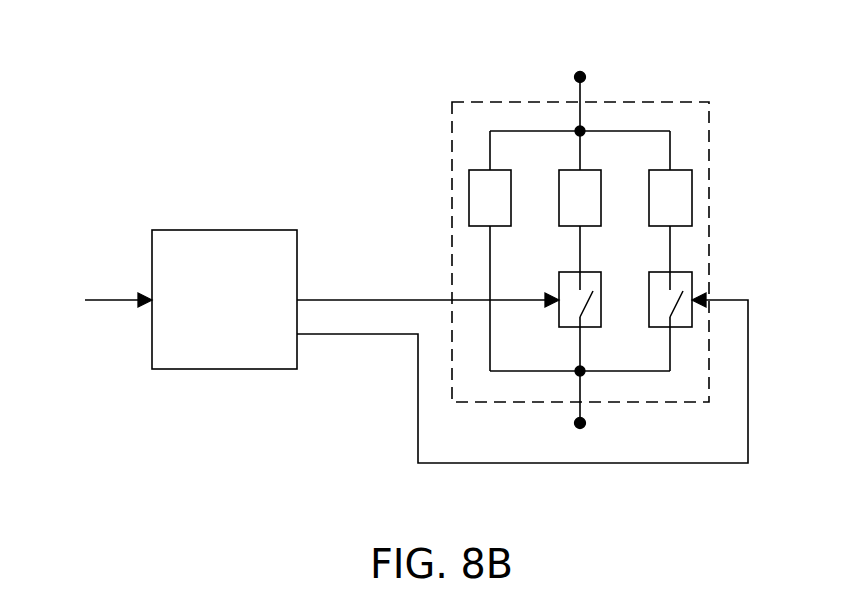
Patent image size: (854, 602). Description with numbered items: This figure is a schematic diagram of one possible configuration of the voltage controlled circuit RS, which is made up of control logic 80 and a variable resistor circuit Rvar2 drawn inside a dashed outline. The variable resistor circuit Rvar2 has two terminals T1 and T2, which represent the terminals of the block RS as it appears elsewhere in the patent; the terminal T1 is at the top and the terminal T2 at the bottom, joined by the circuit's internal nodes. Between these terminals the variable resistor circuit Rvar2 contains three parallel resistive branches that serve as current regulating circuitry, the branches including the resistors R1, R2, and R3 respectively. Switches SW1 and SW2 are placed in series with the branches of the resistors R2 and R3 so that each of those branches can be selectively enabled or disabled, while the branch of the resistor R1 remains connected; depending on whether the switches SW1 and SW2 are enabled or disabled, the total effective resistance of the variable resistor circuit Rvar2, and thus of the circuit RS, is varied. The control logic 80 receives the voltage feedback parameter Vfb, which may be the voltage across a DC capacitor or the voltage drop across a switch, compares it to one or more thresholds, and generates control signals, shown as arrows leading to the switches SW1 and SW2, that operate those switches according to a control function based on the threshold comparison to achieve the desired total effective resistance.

The control logic 80 is at (152, 241).
The voltage controlled circuit RS is at (262, 65).
The variable resistor circuit Rvar2 is at (452, 189).
The terminal T1 is at (586, 77).
The terminal T2 is at (586, 423).
The resistor R1 is at (490, 198).
The resistor R2 is at (580, 198).
The resistor R3 is at (670, 198).
The switch SW1 is at (559, 290).
The switch SW2 is at (649, 290).
The voltage feedback parameter Vfb is at (102, 299).